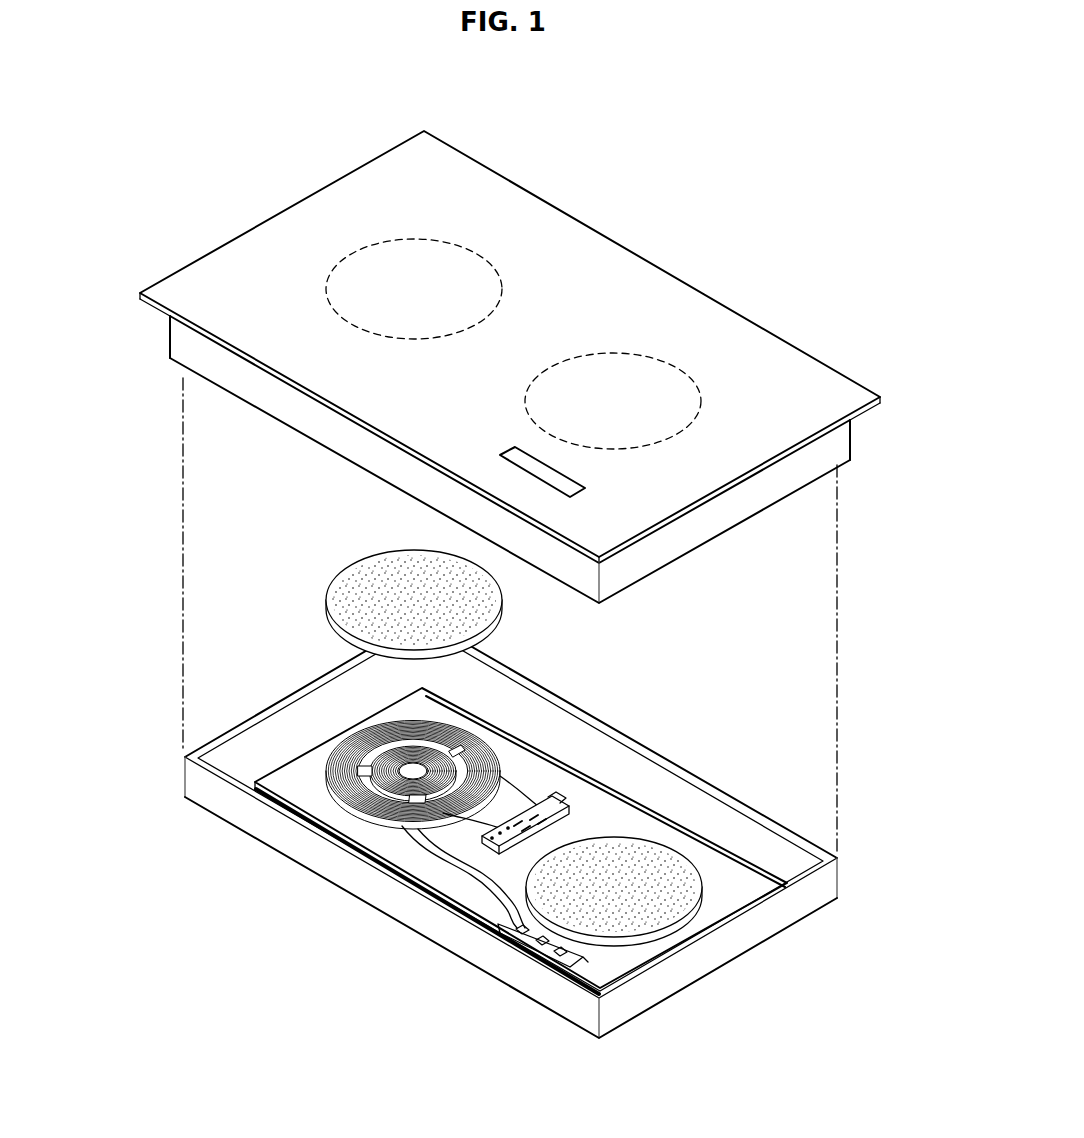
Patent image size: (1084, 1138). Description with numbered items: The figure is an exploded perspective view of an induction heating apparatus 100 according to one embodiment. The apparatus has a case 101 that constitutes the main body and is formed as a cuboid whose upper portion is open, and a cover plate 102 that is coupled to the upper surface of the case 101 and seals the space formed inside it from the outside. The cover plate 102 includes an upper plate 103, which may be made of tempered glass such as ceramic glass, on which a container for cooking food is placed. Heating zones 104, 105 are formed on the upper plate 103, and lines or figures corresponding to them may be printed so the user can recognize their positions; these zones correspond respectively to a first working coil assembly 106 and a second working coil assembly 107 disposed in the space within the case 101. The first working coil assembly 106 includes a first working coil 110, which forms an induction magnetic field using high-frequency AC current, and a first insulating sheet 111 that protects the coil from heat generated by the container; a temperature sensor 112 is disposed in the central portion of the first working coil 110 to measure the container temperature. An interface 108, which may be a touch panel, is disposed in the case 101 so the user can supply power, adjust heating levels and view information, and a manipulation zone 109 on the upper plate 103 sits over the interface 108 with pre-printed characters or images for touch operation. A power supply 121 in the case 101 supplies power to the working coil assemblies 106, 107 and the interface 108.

The induction heating apparatus 100 is at (612, 213).
The case 101 is at (430, 930).
The cover plate 102 is at (170, 336).
The upper plate 103 is at (787, 458).
The first heating zone 104 is at (450, 240).
The second heating zone 105 is at (650, 356).
The first working coil assembly 106 is at (337, 814).
The second working coil assembly 107 is at (627, 953).
The interface 108 is at (546, 954).
The manipulation zone 109 is at (576, 498).
The first working coil 110 is at (338, 764).
The first insulating sheet 111 is at (343, 578).
The temperature sensor 112 is at (418, 770).
The power supply 121 is at (560, 803).